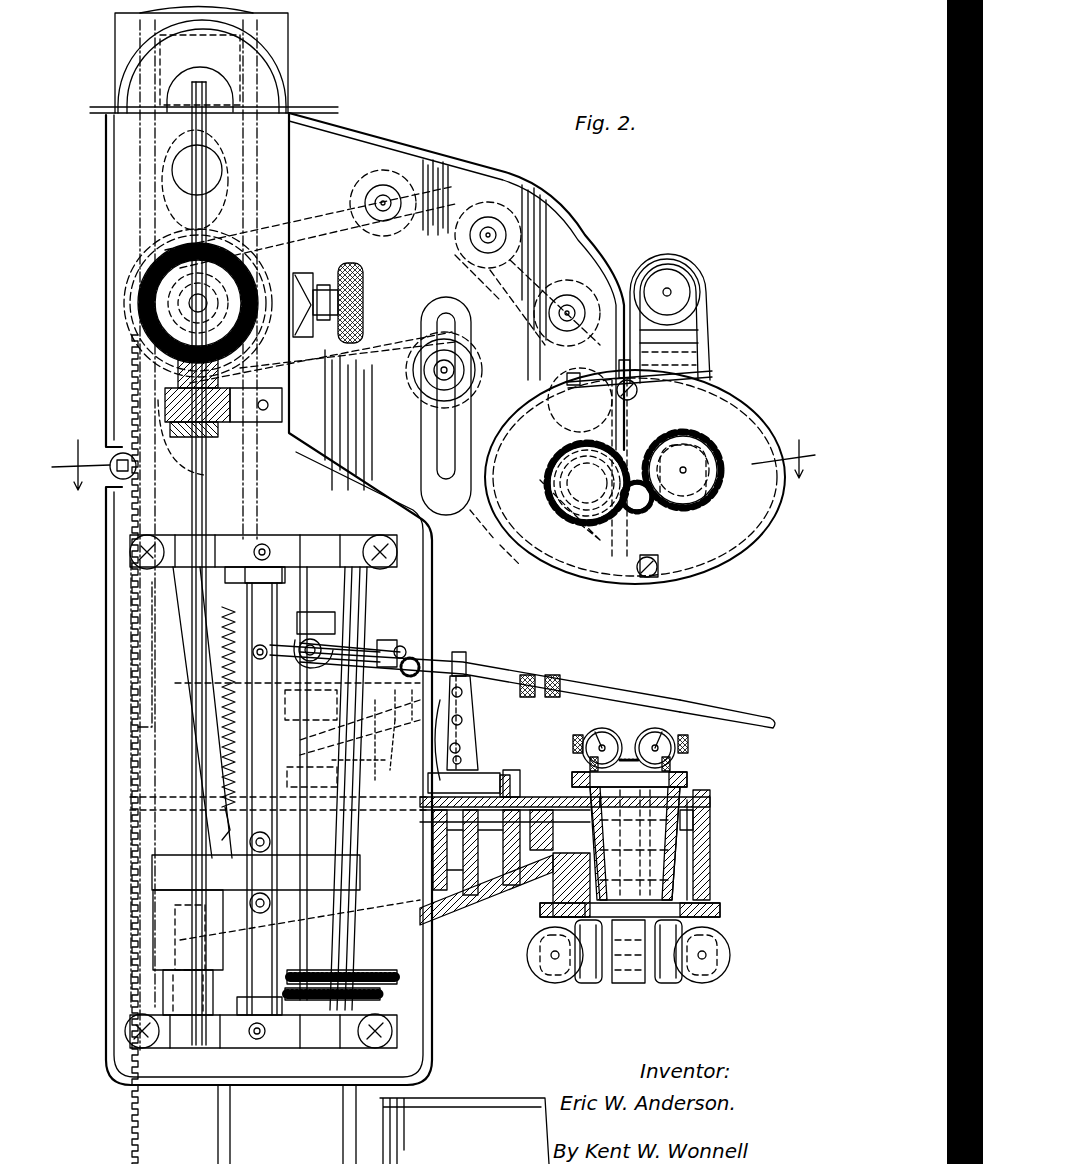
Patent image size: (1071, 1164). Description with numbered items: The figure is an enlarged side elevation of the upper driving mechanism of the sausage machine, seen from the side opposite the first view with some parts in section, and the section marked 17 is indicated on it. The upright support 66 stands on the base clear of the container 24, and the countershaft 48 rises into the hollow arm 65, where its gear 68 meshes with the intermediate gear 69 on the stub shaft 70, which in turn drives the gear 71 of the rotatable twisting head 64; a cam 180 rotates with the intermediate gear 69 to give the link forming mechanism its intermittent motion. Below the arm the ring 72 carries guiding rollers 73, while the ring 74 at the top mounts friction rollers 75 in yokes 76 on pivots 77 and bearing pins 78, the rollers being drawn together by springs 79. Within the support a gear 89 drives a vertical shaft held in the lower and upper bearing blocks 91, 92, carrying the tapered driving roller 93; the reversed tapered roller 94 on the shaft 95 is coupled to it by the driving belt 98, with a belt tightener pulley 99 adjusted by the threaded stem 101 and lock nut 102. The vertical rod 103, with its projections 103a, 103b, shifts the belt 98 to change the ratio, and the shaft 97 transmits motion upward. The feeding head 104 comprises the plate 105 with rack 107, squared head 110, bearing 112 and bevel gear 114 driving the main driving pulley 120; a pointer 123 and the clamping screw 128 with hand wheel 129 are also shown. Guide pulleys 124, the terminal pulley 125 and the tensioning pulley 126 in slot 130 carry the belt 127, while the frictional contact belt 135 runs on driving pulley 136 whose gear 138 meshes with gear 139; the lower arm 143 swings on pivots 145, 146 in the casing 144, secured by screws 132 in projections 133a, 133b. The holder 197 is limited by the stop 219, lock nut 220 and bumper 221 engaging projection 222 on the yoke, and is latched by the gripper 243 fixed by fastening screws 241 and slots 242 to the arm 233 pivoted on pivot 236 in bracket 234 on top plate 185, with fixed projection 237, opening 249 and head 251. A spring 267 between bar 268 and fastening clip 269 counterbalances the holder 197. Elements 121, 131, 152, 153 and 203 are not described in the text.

The upright support 66 is at (106, 200).
The plate 105 is at (290, 13).
The shaft 97 is at (188, 88).
The bevel gear 114 is at (138, 297).
The rack 107 is at (130, 385).
The squared head 110 is at (115, 480).
The section line 17 is at (413, 454).
The bearing 112 is at (165, 405).
The vertical rod 103 is at (258, 447).
The arm 121 is at (245, 410).
The pointer 123 is at (310, 290).
The clamping screw 128 is at (330, 345).
The hand wheel 129 is at (364, 302).
The feeding head 104 is at (592, 233).
The belt 127 is at (310, 200).
The main driving pulley 120 is at (360, 212).
The guide pulleys 124 is at (455, 250).
The slot 130 is at (440, 432).
The slot 131 is at (430, 400).
The tensioning pulley 126 is at (412, 378).
The pivot 145 is at (600, 362).
The pulley 153 is at (688, 272).
The frictional contact belt 135 is at (700, 312).
The shaft 152 is at (700, 372).
The upper projection 133a is at (640, 392).
The lower projection 133b is at (660, 582).
The screws 132 is at (615, 392).
The driving gear 138 is at (765, 405).
The driving pulley 136 is at (740, 535).
The casing 144 is at (510, 548).
The gear 139 is at (556, 520).
The terminal pulley 125 is at (600, 460).
The lower arm 143 is at (638, 510).
The pivot 146 is at (700, 500).
The bearing block 92 is at (240, 535).
The lock nut 102 is at (275, 535).
The threaded stem 101 is at (253, 552).
The belt tightener pulley 99 is at (250, 600).
The upper projection 103a is at (270, 845).
The lower projection 103b is at (270, 904).
The driving roller 93 is at (368, 608).
The bar 268 is at (290, 612).
The projection 222 is at (385, 642).
The spring 267 is at (218, 695).
The fastening clip 269 is at (222, 825).
The driving belt 98 is at (152, 870).
The reversed tapered roller 94 is at (153, 915).
The shaft 95 is at (170, 958).
The bearing block 91 is at (225, 1048).
The gear 89 is at (290, 1045).
The countershaft 48 is at (420, 953).
The gear 68 is at (380, 850).
The lever 203 is at (600, 695).
The holder 197 is at (720, 710).
The gripper 243 is at (459, 652).
The fastening screws 241 is at (463, 694).
The fixed projection 237 is at (465, 720).
The arm 233 is at (470, 735).
The head 251 is at (462, 750).
The opening 249 is at (464, 780).
The pivot 236 is at (512, 770).
The bracket 234 is at (515, 777).
The intermediate gear 69 is at (522, 797).
The top plate 185 is at (560, 797).
The cam 180 is at (540, 840).
The stub shaft 70 is at (490, 890).
The bearing pin 78 is at (600, 745).
The friction rollers 75 is at (635, 755).
The yoke 76 is at (573, 740).
The pivots 77 is at (590, 765).
The ring 74 is at (688, 780).
The gear 71 is at (700, 820).
The arm 65 is at (710, 838).
The springs 79 is at (645, 820).
The twisting head 64 is at (710, 868).
The ring 72 is at (720, 908).
The rollers 73 is at (730, 953).
The bumper 221 is at (412, 705).
The slots 242 is at (450, 718).
The lock nut 220 is at (400, 768).
The stop 219 is at (378, 740).
The container 24 is at (465, 1100).